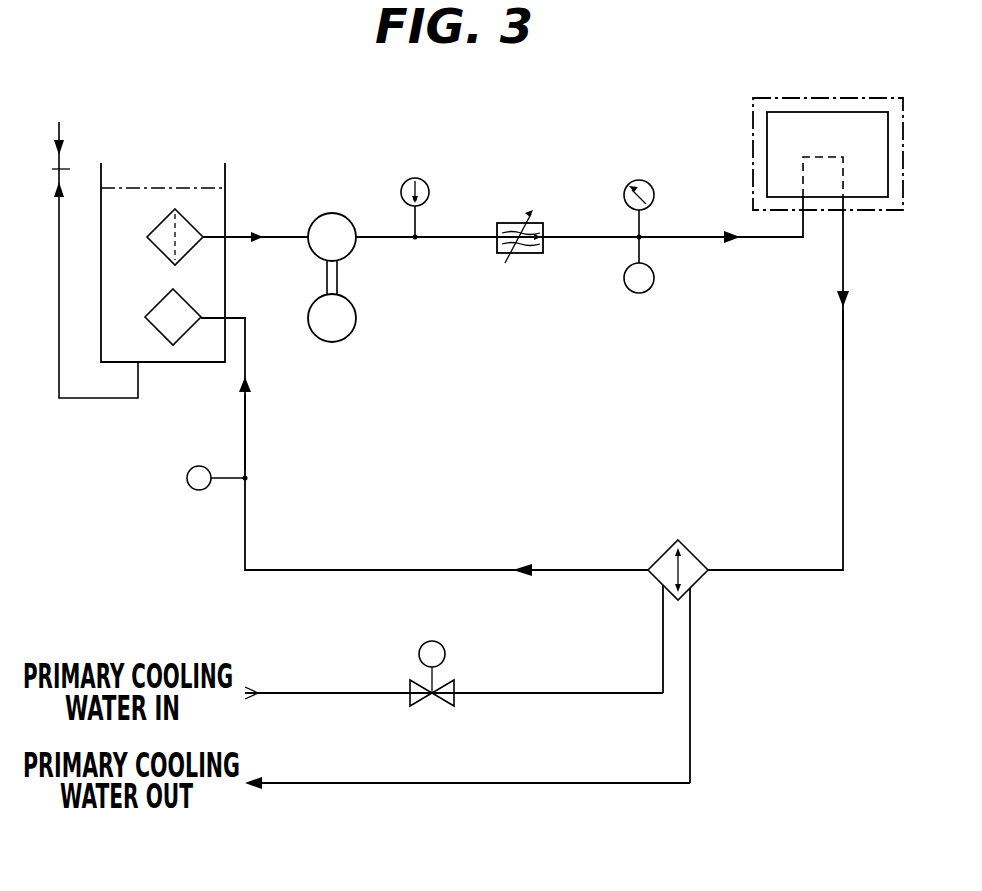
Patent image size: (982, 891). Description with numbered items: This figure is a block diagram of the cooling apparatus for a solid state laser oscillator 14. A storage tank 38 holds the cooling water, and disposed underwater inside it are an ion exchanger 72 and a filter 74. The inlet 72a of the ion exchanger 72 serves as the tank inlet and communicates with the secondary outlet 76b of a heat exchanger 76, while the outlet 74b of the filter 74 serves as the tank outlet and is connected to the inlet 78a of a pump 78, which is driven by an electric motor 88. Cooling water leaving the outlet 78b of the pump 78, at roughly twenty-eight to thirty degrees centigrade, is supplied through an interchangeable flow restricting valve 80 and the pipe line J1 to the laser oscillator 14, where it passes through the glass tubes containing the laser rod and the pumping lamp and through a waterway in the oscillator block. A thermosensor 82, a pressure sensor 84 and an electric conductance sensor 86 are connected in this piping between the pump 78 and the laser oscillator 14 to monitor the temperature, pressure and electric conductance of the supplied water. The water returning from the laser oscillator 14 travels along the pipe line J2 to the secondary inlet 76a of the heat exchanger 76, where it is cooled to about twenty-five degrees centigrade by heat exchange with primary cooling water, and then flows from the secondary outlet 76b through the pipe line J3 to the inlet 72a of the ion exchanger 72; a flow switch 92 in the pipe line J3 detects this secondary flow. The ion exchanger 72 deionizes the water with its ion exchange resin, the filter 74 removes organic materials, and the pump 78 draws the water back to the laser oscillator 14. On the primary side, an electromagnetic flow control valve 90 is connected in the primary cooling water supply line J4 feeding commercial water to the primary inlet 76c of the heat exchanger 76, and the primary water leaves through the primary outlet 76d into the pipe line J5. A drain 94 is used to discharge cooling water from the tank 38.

The laser oscillator 14 is at (806, 97).
The storage tank 38 is at (226, 178).
The ion exchanger 72 is at (183, 338).
The inlet of the ion exchanger 72a is at (226, 316).
The filter 74 is at (165, 212).
The outlet of the filter 74b is at (226, 235).
The heat exchanger 76 is at (688, 550).
The secondary inlet of the heat exchanger 76a is at (708, 571).
The secondary outlet of the heat exchanger 76b is at (648, 570).
The primary inlet of the heat exchanger 76c is at (660, 590).
The primary outlet of the heat exchanger 76d is at (695, 590).
The pump 78 is at (345, 214).
The inlet of the pump 78a is at (310, 232).
The outlet of the pump 78b is at (352, 250).
The flow restricting valve 80 is at (518, 222).
The thermosensor 82 is at (425, 180).
The pressure sensor 84 is at (646, 182).
The electric conductance sensor 86 is at (654, 285).
The electric motor 88 is at (352, 332).
The electromagnetic flow control valve 90 is at (443, 683).
The flow switch 92 is at (187, 480).
The drain 94 is at (70, 168).
The pipe line J1 is at (580, 240).
The pipe line J2 is at (841, 333).
The pipe line J3 is at (245, 412).
The primary cooling water supply line J4 is at (590, 693).
The pipe line J5 is at (582, 783).